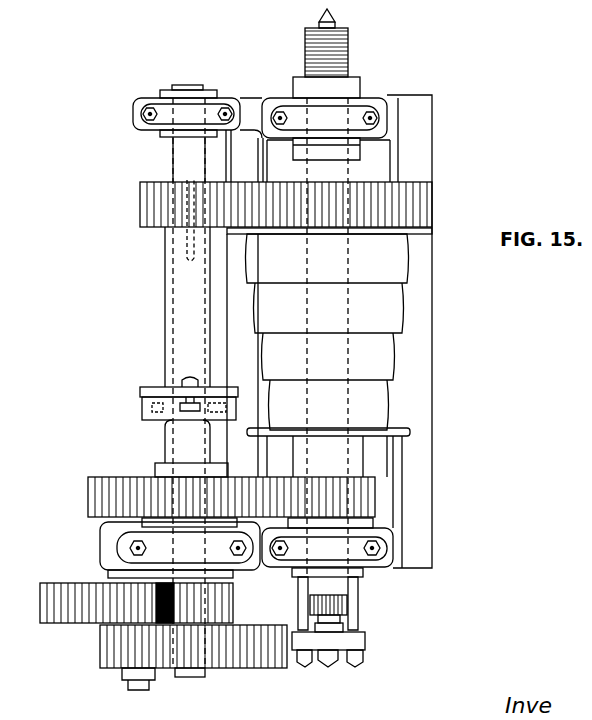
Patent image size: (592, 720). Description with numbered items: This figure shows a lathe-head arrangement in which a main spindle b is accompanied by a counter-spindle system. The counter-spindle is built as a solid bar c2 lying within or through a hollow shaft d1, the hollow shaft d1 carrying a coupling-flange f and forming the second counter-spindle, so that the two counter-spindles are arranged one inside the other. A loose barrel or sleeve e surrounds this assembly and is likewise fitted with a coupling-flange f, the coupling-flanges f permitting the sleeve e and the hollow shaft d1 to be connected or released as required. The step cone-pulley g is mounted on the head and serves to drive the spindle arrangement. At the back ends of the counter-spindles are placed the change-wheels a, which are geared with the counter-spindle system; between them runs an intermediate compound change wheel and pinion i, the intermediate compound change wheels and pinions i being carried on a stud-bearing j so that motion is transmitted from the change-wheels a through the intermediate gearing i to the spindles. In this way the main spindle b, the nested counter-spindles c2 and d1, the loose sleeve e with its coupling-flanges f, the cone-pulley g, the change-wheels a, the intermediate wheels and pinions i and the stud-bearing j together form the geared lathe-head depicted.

The change-wheels a is at (200, 600).
The main spindle b is at (328, 617).
The key c2 is at (190, 684).
The hollow shaft d1 is at (191, 454).
The loose barrel or sleeve e is at (187, 345).
The coupling-flanges f is at (145, 393).
The cone-pulley g is at (329, 337).
The intermediate compound change wheels and pinions i is at (70, 620).
The stud-bearing j is at (138, 690).